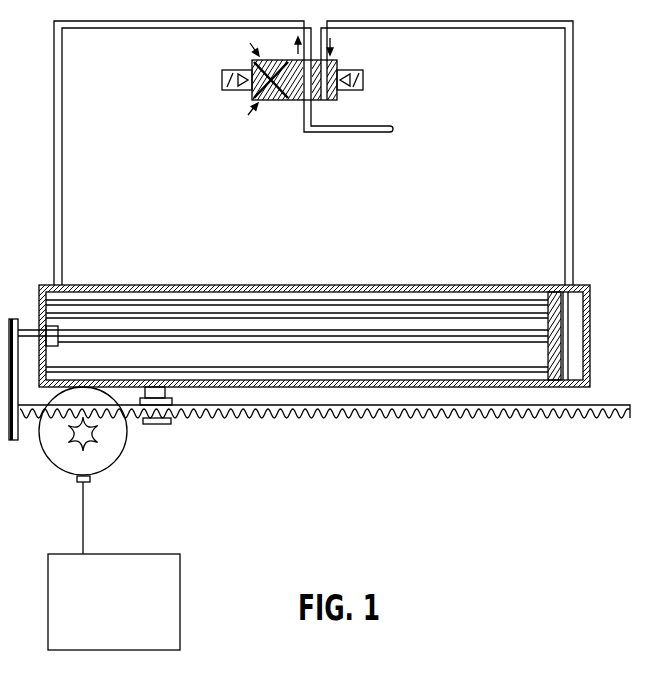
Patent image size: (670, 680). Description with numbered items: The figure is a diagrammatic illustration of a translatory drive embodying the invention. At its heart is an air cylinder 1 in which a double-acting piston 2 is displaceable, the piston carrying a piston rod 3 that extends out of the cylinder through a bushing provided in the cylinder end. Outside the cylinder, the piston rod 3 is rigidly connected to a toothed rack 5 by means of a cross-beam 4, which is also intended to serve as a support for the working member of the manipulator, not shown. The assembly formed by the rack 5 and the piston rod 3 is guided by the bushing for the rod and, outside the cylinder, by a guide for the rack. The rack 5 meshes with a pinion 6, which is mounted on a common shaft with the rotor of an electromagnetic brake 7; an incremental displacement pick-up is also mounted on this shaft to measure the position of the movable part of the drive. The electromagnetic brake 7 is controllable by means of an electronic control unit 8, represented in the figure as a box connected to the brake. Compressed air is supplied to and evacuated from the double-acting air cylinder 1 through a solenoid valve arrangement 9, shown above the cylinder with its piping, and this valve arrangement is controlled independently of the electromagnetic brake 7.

The air cylinder 1 is at (478, 285).
The double-acting piston 2 is at (568, 329).
The piston rod 3 is at (277, 333).
The cross-beam 4 is at (17, 318).
The toothed rack 5 is at (433, 417).
The pinion 6 is at (96, 439).
The electromagnetic brake 7 is at (118, 437).
The electronic control unit 8 is at (181, 576).
The solenoid valve arrangement 9 is at (350, 58).